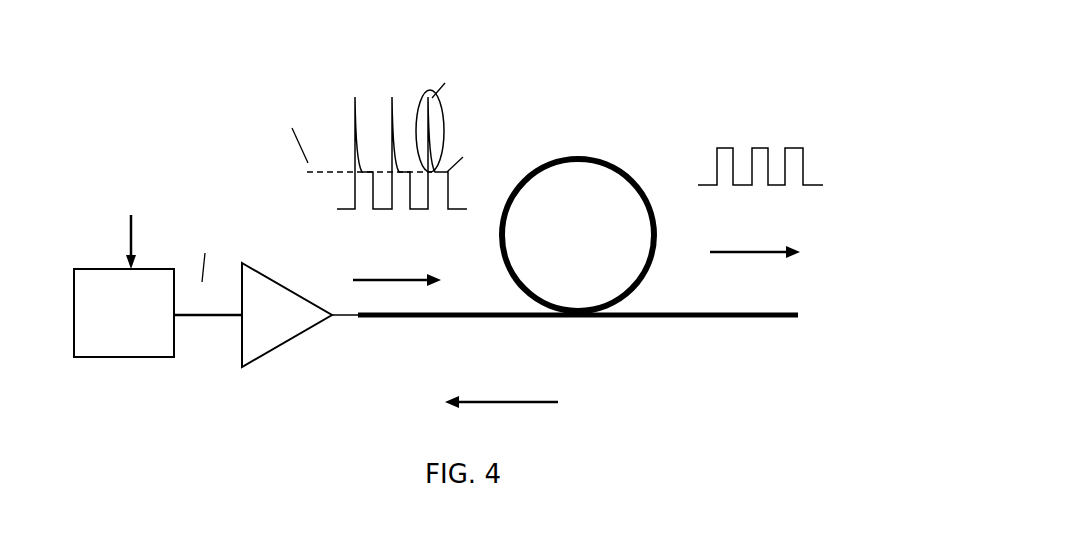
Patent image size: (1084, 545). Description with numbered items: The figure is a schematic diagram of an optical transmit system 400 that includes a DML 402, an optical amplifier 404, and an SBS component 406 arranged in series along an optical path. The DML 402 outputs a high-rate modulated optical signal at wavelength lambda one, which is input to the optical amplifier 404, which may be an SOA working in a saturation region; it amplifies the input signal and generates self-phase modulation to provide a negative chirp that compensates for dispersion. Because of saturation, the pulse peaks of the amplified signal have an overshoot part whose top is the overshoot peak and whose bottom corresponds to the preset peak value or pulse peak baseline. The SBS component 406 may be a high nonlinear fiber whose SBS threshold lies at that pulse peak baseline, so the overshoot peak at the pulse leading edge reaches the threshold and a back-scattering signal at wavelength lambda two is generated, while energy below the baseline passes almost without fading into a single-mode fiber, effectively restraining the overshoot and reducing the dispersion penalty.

The optical transmit system 400 is at (523, 48).
The DML 402 is at (100, 357).
The optical amplifier 404 is at (273, 350).
The SBS component 406 is at (627, 165).